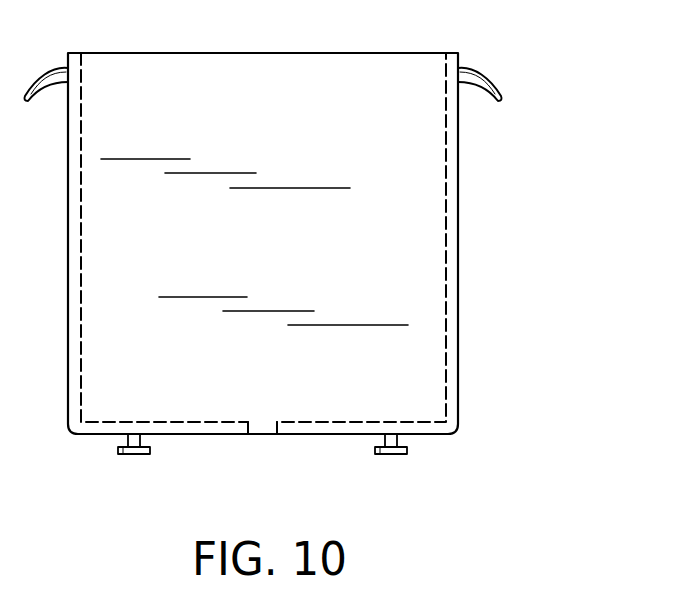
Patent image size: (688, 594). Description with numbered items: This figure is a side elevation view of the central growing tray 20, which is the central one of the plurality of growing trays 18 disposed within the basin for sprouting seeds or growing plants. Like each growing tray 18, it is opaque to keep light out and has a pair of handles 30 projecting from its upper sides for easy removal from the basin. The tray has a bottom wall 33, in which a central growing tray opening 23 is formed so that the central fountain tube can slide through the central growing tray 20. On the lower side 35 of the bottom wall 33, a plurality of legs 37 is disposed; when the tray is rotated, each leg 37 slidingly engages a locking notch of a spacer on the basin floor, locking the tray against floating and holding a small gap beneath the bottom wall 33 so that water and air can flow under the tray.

The growing tray 18 is at (458, 53).
The central growing tray 20 is at (427, 160).
The central growing tray opening 23 is at (262, 428).
The handles 30 is at (490, 78).
The bottom wall 33 is at (97, 434).
The lower side 35 is at (178, 434).
The legs 37 is at (407, 450).